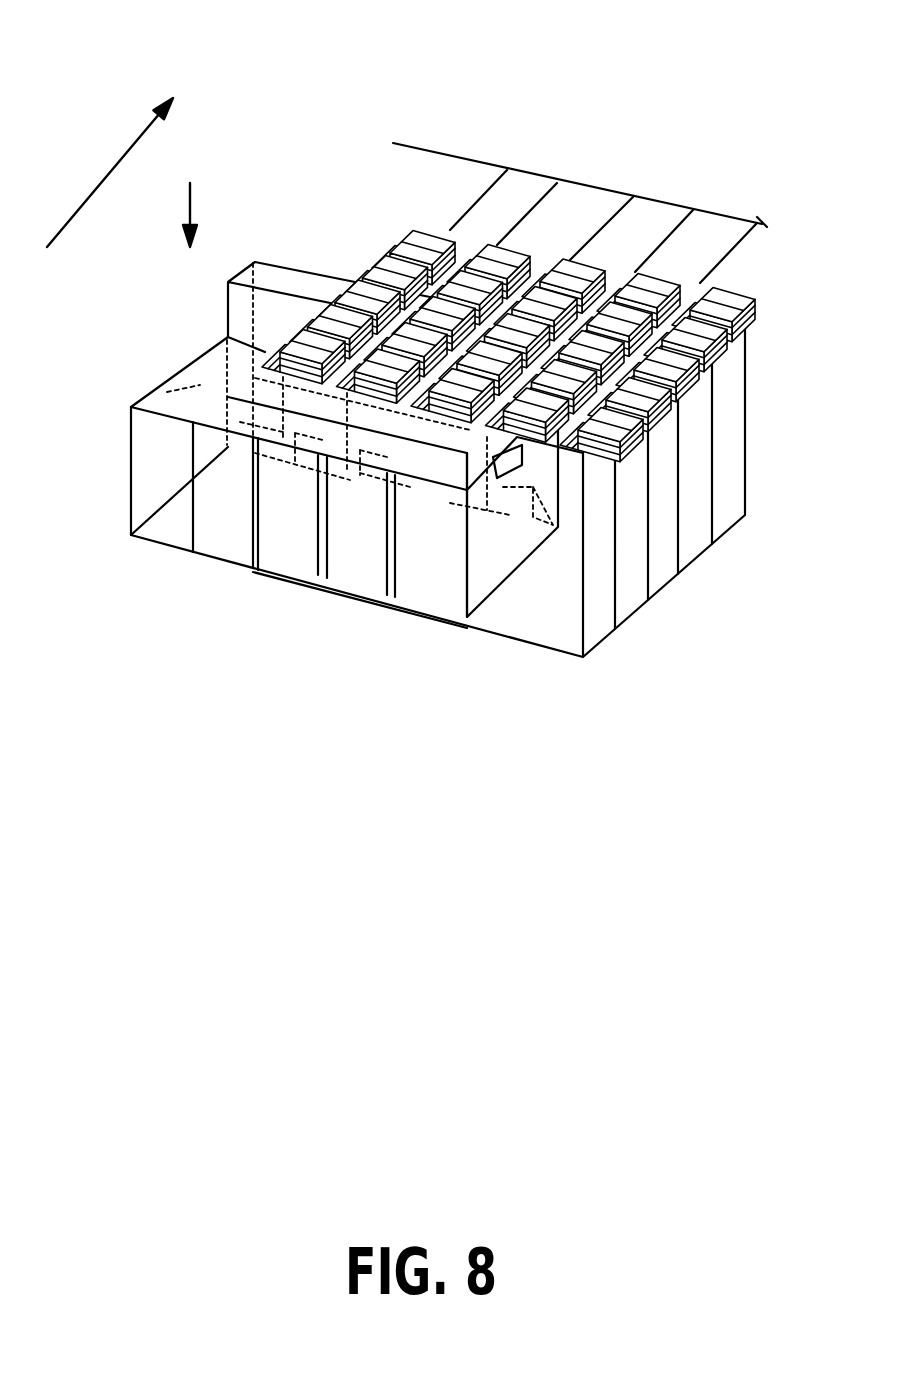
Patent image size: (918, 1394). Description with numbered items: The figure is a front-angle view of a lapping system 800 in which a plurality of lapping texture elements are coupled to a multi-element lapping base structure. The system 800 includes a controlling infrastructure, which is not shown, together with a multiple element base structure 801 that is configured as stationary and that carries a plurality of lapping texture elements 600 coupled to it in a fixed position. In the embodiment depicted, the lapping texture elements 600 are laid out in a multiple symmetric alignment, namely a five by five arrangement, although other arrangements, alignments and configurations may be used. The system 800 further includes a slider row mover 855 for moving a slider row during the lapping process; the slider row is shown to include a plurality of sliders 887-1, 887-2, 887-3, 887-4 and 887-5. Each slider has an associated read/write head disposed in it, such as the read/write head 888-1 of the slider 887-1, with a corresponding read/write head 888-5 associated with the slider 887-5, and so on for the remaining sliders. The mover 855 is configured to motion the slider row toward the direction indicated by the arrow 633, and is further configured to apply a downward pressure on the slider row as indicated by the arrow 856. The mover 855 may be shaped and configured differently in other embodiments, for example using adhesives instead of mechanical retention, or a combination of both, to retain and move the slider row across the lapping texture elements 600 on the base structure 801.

The lapping system 800 is at (640, 38).
The multiple element base structure 801 is at (667, 560).
The slider row mover 855 is at (245, 313).
The arrow 856 is at (192, 202).
The arrow 633 is at (132, 132).
The lapping texture elements 600 is at (514, 297).
The slider 887-1 is at (430, 568).
The slider 887-2 is at (360, 552).
The slider 887-3 is at (300, 540).
The slider 887-4 is at (237, 530).
The slider 887-5 is at (170, 515).
The read/write head 888-1 is at (522, 508).
The read/write head 888-5 is at (232, 438).